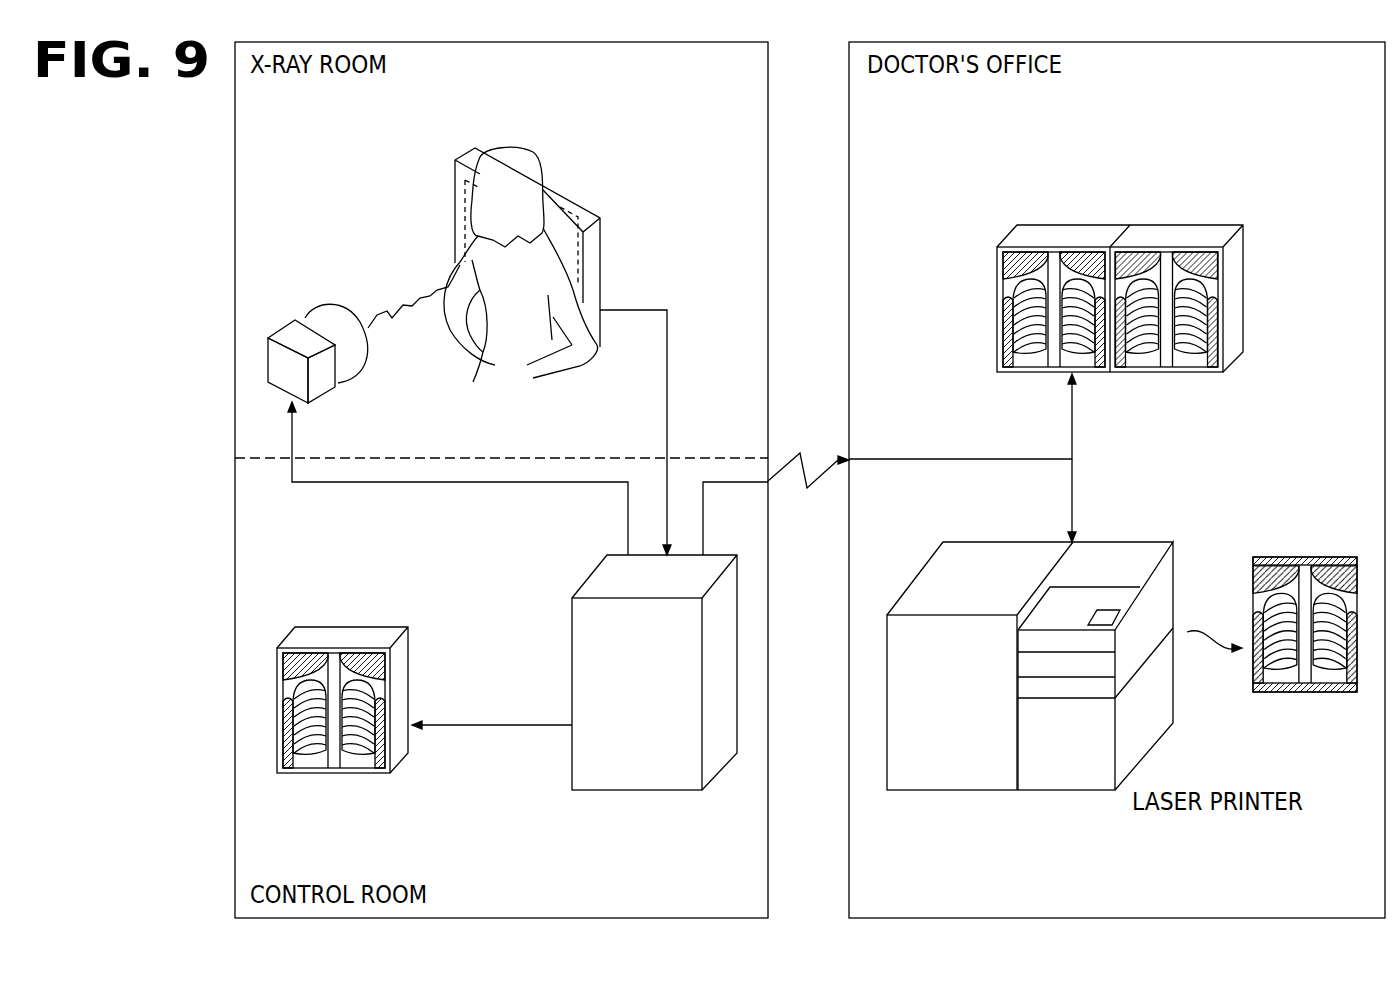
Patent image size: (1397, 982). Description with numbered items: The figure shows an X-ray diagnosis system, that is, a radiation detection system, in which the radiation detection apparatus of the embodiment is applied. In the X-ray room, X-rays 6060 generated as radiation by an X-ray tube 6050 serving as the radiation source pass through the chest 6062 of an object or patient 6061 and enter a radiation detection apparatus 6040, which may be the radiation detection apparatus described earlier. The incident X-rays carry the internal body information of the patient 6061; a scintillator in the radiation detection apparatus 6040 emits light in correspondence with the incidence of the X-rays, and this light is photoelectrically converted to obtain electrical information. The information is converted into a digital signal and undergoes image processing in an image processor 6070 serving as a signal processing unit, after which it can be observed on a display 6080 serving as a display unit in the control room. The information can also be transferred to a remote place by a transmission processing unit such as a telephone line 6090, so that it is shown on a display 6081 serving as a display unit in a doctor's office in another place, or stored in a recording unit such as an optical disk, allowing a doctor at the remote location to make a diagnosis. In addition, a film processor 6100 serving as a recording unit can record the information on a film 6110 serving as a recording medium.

The radiation detection apparatus 6040 is at (563, 220).
The X-ray tube 6050 is at (282, 327).
The X-rays 6060 is at (403, 305).
The patient 6061 is at (517, 147).
The chest 6062 is at (513, 330).
The image processor 6070 is at (570, 757).
The display 6080 is at (408, 668).
The display 6081 is at (1033, 232).
The telephone line 6090 is at (810, 468).
The film processor 6100 is at (992, 542).
The film 6110 is at (1305, 556).